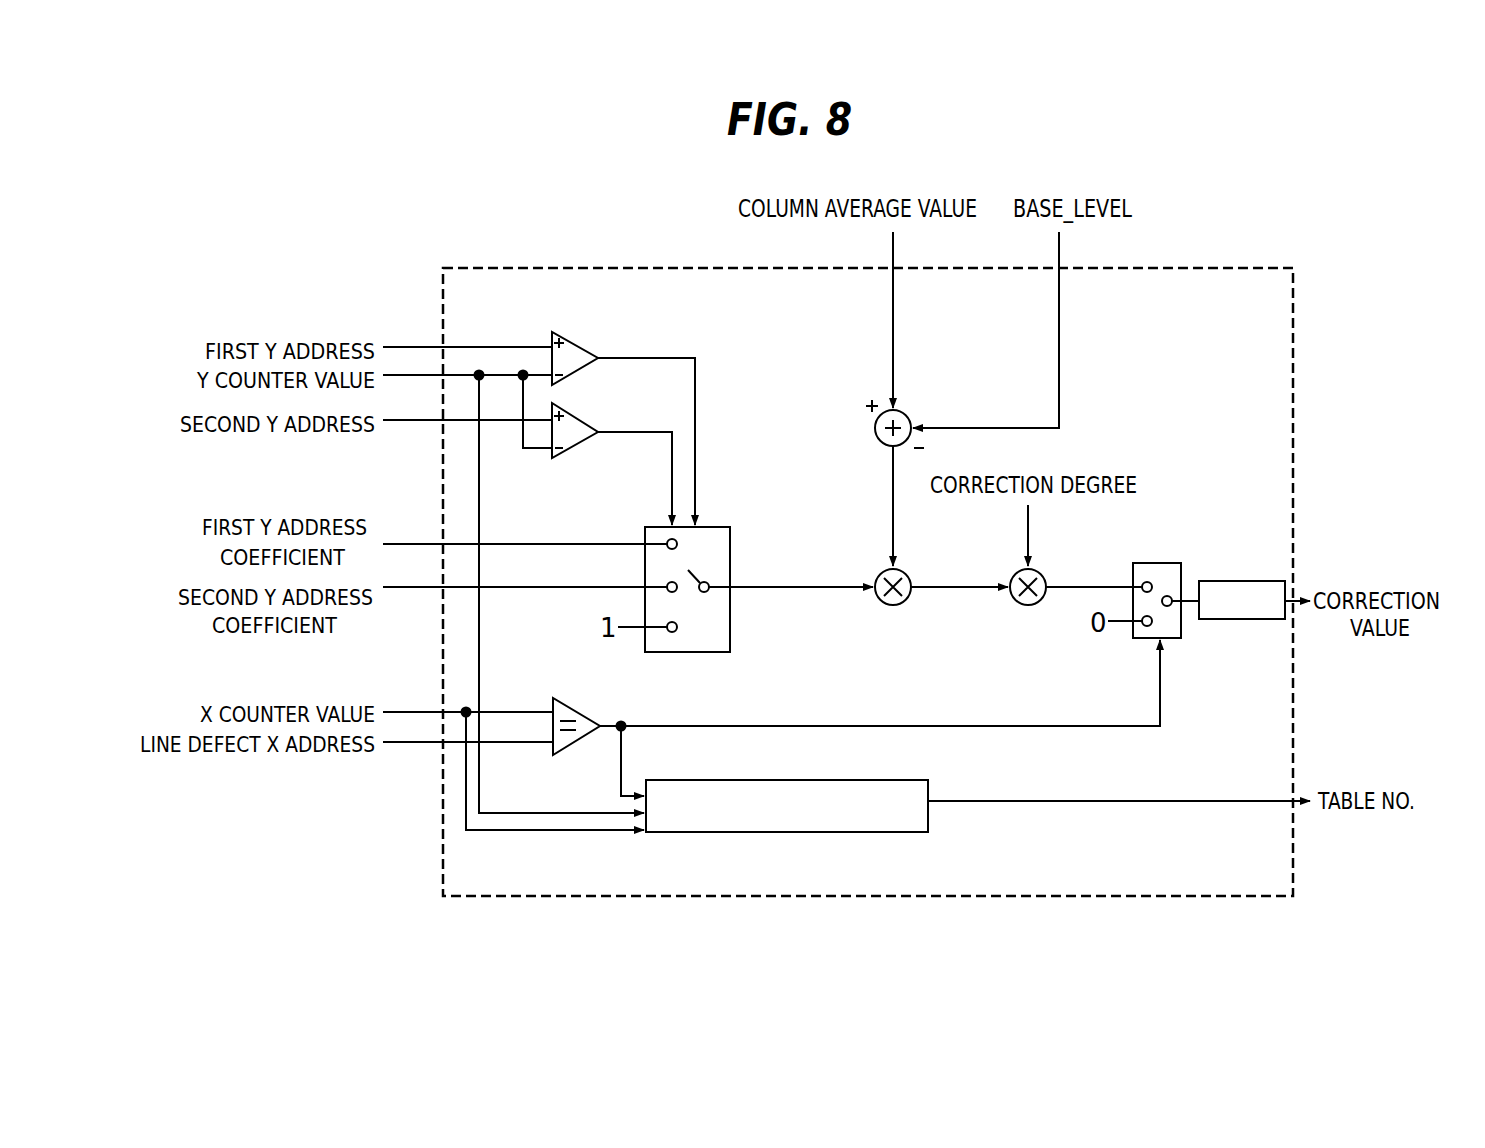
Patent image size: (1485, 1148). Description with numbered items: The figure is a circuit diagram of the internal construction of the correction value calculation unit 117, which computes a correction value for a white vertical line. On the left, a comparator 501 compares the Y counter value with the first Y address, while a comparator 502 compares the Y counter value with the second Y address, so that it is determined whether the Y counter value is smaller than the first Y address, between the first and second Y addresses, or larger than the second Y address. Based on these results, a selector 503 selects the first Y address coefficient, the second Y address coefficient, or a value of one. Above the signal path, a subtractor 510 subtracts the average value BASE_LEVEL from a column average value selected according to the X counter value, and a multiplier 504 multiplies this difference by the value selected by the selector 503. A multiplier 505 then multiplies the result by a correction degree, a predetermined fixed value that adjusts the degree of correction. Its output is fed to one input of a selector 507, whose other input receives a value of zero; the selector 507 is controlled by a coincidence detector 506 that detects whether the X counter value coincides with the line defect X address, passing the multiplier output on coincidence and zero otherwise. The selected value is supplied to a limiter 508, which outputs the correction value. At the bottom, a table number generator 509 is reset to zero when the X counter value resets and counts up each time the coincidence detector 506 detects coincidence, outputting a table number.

The correction value calculation unit 117 is at (506, 266).
The comparator 501 is at (581, 346).
The comparator 502 is at (586, 420).
The selector 503 is at (719, 526).
The multiplier 504 is at (890, 604).
The multiplier 505 is at (1021, 604).
The coincidence detector 506 is at (587, 692).
The selector 507 is at (1153, 562).
The limiter 508 is at (1232, 581).
The table number generator 509 is at (775, 832).
The subtractor 510 is at (881, 445).